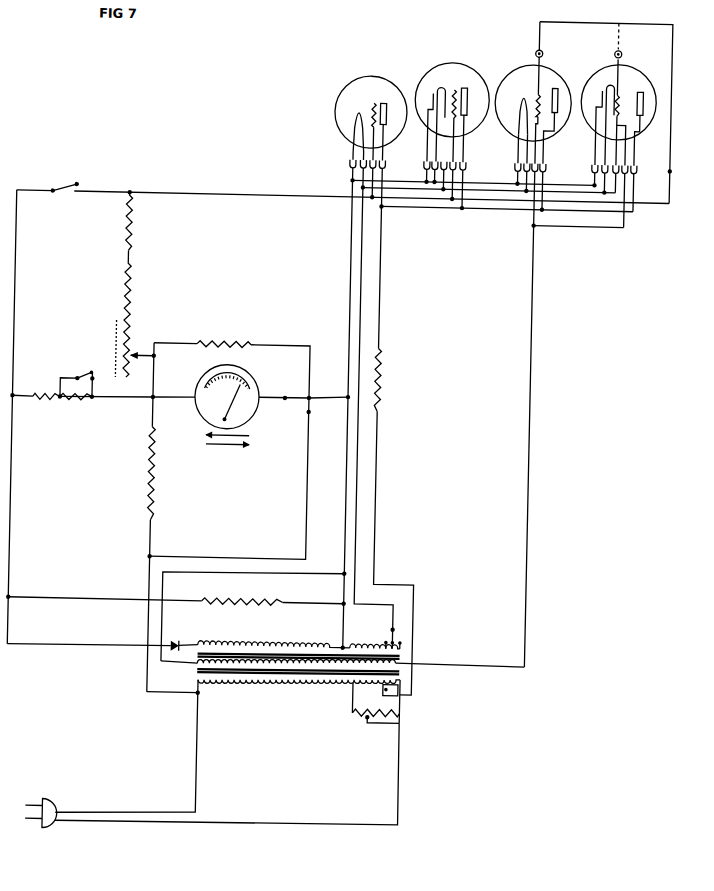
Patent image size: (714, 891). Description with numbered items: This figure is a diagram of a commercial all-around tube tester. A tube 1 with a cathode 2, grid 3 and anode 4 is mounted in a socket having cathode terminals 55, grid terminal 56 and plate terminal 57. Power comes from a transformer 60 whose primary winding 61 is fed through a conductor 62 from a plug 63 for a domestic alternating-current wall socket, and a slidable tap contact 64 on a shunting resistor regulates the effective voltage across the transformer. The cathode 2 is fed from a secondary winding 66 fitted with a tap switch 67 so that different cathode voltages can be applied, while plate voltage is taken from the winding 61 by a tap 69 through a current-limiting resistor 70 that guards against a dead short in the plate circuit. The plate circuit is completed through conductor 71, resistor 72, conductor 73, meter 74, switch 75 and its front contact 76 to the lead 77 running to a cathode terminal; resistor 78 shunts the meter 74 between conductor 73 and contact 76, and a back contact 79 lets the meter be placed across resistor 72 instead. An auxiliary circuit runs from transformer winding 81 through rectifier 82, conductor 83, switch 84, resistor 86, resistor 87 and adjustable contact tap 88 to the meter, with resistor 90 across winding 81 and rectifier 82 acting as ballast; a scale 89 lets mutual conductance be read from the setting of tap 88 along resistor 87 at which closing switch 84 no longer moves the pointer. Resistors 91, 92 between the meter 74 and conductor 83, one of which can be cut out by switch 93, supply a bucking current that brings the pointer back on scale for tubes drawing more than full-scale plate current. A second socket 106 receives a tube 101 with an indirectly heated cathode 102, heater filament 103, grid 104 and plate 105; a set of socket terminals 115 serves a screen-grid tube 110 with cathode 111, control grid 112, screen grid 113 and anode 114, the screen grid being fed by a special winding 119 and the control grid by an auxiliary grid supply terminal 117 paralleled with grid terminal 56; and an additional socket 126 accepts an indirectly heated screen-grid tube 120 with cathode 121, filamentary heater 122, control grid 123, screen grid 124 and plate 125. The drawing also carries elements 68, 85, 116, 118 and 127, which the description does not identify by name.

The tube 1 is at (328, 127).
The cathode 2 is at (348, 117).
The grid 3 is at (368, 100).
The anode 4 is at (382, 118).
The cathode terminals 55 is at (344, 168).
The grid terminal 56 is at (382, 172).
The plate terminal 57 is at (382, 164).
The transformer 60 is at (200, 666).
The primary winding 61 is at (313, 684).
The conductor 62 is at (205, 773).
The plug 63 is at (61, 828).
The slidable tap contact 64 is at (375, 718).
The secondary winding 66 is at (377, 640).
The tap switch 67 is at (399, 630).
The contact 68 is at (395, 688).
The tap 69 is at (389, 690).
The current-limiting resistor 70 is at (381, 380).
The conductor 71 is at (151, 678).
The resistor 72 is at (156, 490).
The conductor 73 is at (160, 401).
The meter 74 is at (252, 374).
The switch 75 is at (286, 399).
The switch contact 76 is at (310, 399).
The lead 77 is at (347, 358).
The resistor 78 is at (245, 347).
The back contact 79 is at (310, 413).
The transformer winding 81 is at (253, 648).
The rectifier 82 is at (178, 646).
The conductor 83 is at (12, 490).
The switch 84 is at (57, 183).
The conductor 85 is at (221, 197).
The resistor 86 is at (128, 219).
The resistor 87 is at (127, 316).
The adjustable contact tap 88 is at (147, 356).
The scale 89 is at (112, 350).
The resistor 90 is at (252, 604).
The resistor 91 is at (47, 410).
The resistor 92 is at (75, 408).
The switch 93 is at (80, 382).
The tube 101 is at (468, 123).
The indirectly heated cathode 102 is at (426, 83).
The heater filament 103 is at (434, 86).
The grid 104 is at (446, 86).
The plate 105 is at (461, 98).
The socket 106 is at (480, 172).
The screen-grid tube 110 is at (550, 122).
The cathode 111 is at (515, 86).
The control grid 112 is at (532, 92).
The screen-grid 113 is at (534, 100).
The anode 114 is at (550, 92).
The socket terminals 115 is at (562, 171).
The indicator lamp 116 is at (533, 48).
The auxiliary grid supply terminal 117 is at (665, 166).
The conductor 118 is at (530, 273).
The special winding 119 is at (416, 667).
The indirectly heated screen-grid tube 120 is at (639, 122).
The indirectly heated cathode 121 is at (600, 80).
The filamentary heater 122 is at (592, 98).
The control grid 123 is at (608, 85).
The screen grid 124 is at (615, 87).
The plate 125 is at (636, 92).
The socket 126 is at (646, 174).
The indicator lamp 127 is at (607, 45).